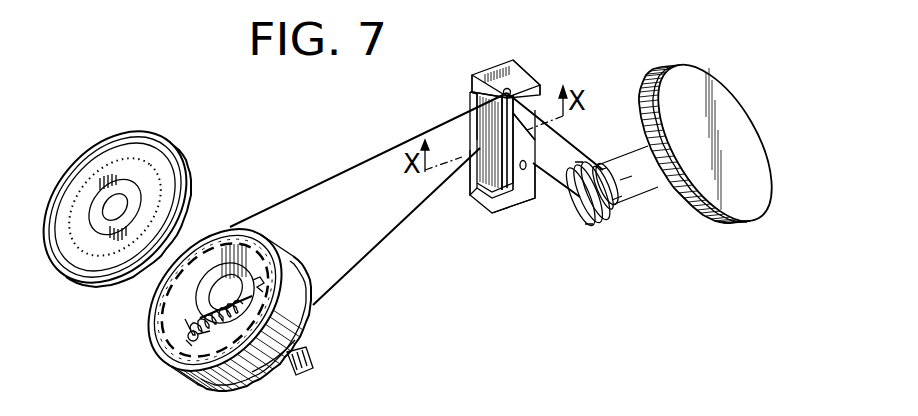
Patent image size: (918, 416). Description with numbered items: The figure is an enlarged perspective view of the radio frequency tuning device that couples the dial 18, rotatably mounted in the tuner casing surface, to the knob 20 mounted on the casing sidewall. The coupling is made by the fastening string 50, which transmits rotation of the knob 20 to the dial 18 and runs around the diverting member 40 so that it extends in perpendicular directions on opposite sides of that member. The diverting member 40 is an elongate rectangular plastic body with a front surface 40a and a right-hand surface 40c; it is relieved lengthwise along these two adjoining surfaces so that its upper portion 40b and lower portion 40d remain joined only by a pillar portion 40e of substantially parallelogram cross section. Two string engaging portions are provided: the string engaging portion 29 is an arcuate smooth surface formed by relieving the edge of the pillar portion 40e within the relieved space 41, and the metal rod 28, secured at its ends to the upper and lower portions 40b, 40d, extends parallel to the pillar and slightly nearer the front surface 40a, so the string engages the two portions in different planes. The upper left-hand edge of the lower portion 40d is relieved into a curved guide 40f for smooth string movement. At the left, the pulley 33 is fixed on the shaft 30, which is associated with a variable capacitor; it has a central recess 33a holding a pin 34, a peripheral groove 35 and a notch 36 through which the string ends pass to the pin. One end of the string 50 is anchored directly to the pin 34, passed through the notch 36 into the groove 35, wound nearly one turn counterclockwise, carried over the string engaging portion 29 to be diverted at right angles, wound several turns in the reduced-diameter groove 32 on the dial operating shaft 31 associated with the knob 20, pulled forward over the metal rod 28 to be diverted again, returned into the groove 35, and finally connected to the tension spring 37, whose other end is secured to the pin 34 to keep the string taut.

The dial 18 is at (168, 165).
The knob 20 is at (751, 121).
The metal rod 28 is at (518, 130).
The string engaging portion 29 is at (483, 121).
The shaft 30 is at (308, 358).
The dial operating shaft 31 is at (640, 195).
The groove 32 is at (606, 171).
The pulley 33 is at (182, 355).
The central recess 33a is at (186, 292).
The pin 34 is at (188, 334).
The groove 35 is at (264, 356).
The notch 36 is at (272, 268).
The tension spring 37 is at (246, 312).
The diverting member 40 is at (480, 190).
The front surface 40a is at (508, 62).
The upper portion 40b is at (476, 88).
The right-hand surface 40c is at (530, 76).
The lower portion 40d is at (510, 201).
The pillar portion 40e is at (487, 100).
The guide 40f is at (477, 165).
The relieved space 41 is at (553, 105).
The fastening string 50 is at (327, 181).